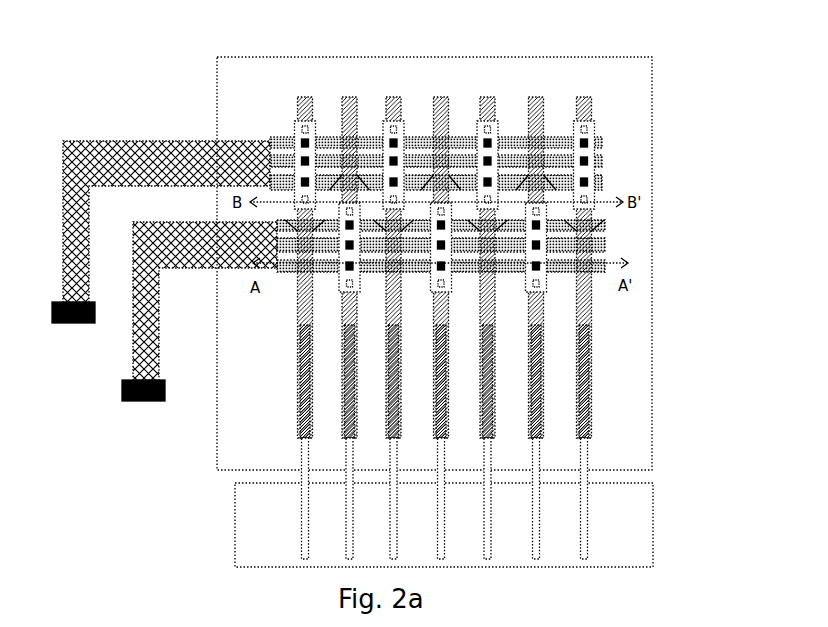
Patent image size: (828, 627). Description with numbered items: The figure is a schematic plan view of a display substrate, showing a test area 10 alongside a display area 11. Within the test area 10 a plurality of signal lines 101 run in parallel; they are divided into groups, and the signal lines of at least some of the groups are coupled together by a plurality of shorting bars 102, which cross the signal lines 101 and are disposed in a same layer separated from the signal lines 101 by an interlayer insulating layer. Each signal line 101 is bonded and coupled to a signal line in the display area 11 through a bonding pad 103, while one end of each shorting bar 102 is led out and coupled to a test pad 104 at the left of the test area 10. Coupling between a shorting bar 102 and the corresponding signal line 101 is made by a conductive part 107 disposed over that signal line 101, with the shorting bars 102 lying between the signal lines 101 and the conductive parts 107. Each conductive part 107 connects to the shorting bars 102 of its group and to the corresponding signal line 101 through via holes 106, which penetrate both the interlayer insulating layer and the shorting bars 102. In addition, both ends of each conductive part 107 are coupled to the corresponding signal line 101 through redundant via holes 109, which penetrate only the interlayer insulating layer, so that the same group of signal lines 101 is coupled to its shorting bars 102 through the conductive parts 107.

The test area 10 is at (653, 272).
The display area 11 is at (654, 522).
The signal line 101 is at (590, 105).
The shorting bar 102 is at (600, 175).
The bonding pad 103 is at (582, 386).
The test pad 104 is at (164, 271).
The via hole 106 is at (297, 137).
The conductive part 107 is at (498, 122).
The redundant via hole 109 is at (299, 204).